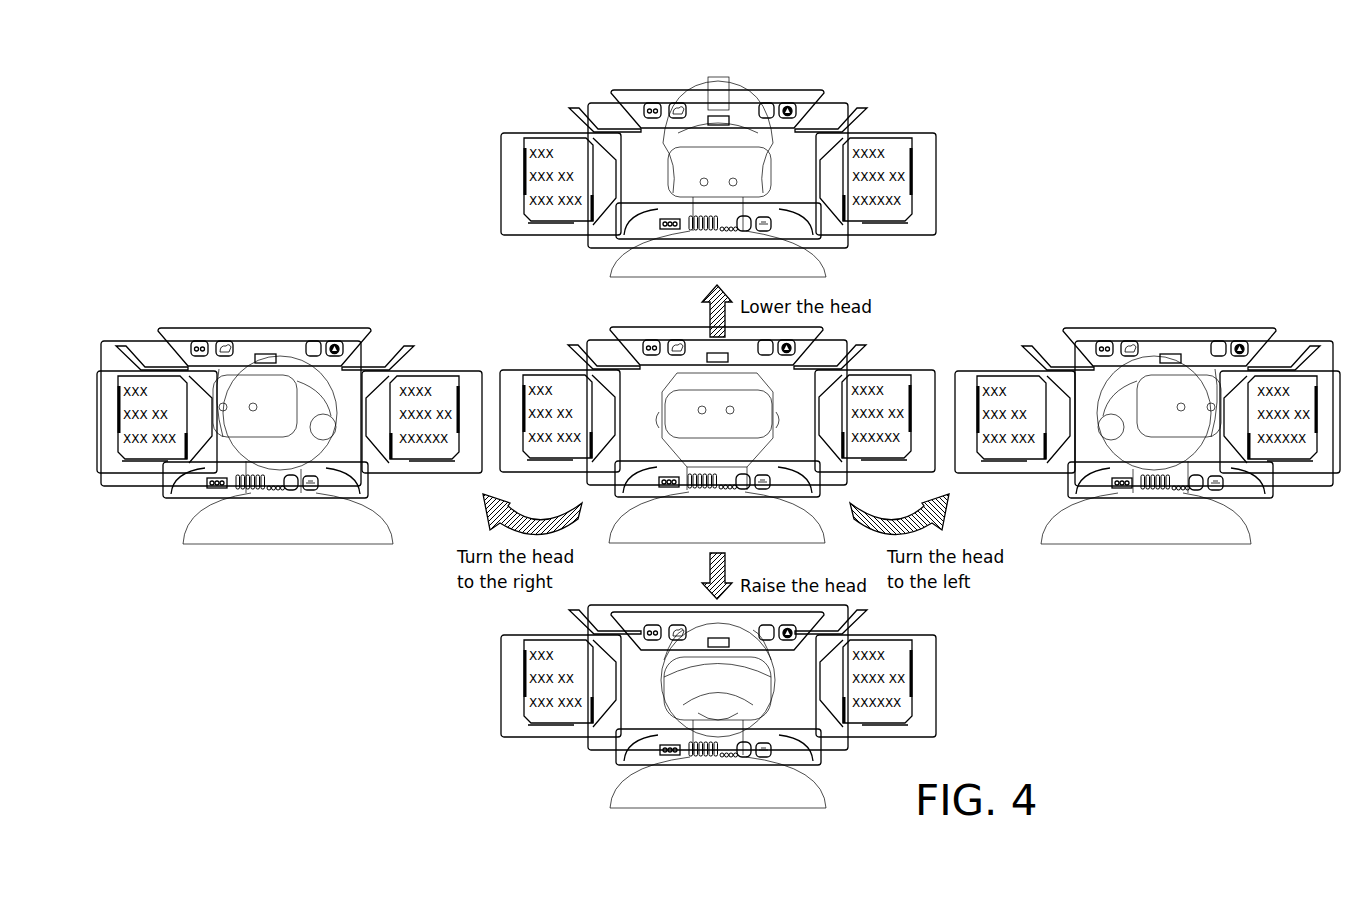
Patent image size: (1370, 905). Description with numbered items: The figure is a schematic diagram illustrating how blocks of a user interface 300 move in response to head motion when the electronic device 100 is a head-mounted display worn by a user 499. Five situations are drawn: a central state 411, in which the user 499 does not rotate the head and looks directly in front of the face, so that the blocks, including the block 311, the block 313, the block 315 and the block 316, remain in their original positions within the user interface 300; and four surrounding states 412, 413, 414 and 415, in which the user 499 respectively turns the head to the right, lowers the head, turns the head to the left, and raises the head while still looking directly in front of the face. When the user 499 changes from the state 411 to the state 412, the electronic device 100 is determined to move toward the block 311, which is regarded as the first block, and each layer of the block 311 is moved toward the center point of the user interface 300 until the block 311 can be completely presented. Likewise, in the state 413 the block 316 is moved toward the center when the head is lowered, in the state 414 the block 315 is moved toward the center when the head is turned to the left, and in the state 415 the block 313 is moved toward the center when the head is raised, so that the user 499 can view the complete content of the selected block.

The electronic device 100 is at (717, 389).
The user interface 300 is at (717, 402).
The block 311 is at (145, 379).
The block 313 is at (609, 599).
The block 315 is at (1296, 379).
The block 316 is at (632, 221).
The state 411 is at (580, 320).
The state 412 is at (243, 306).
The state 413 is at (645, 86).
The state 414 is at (1193, 306).
The state 415 is at (597, 768).
The user 499 is at (717, 540).